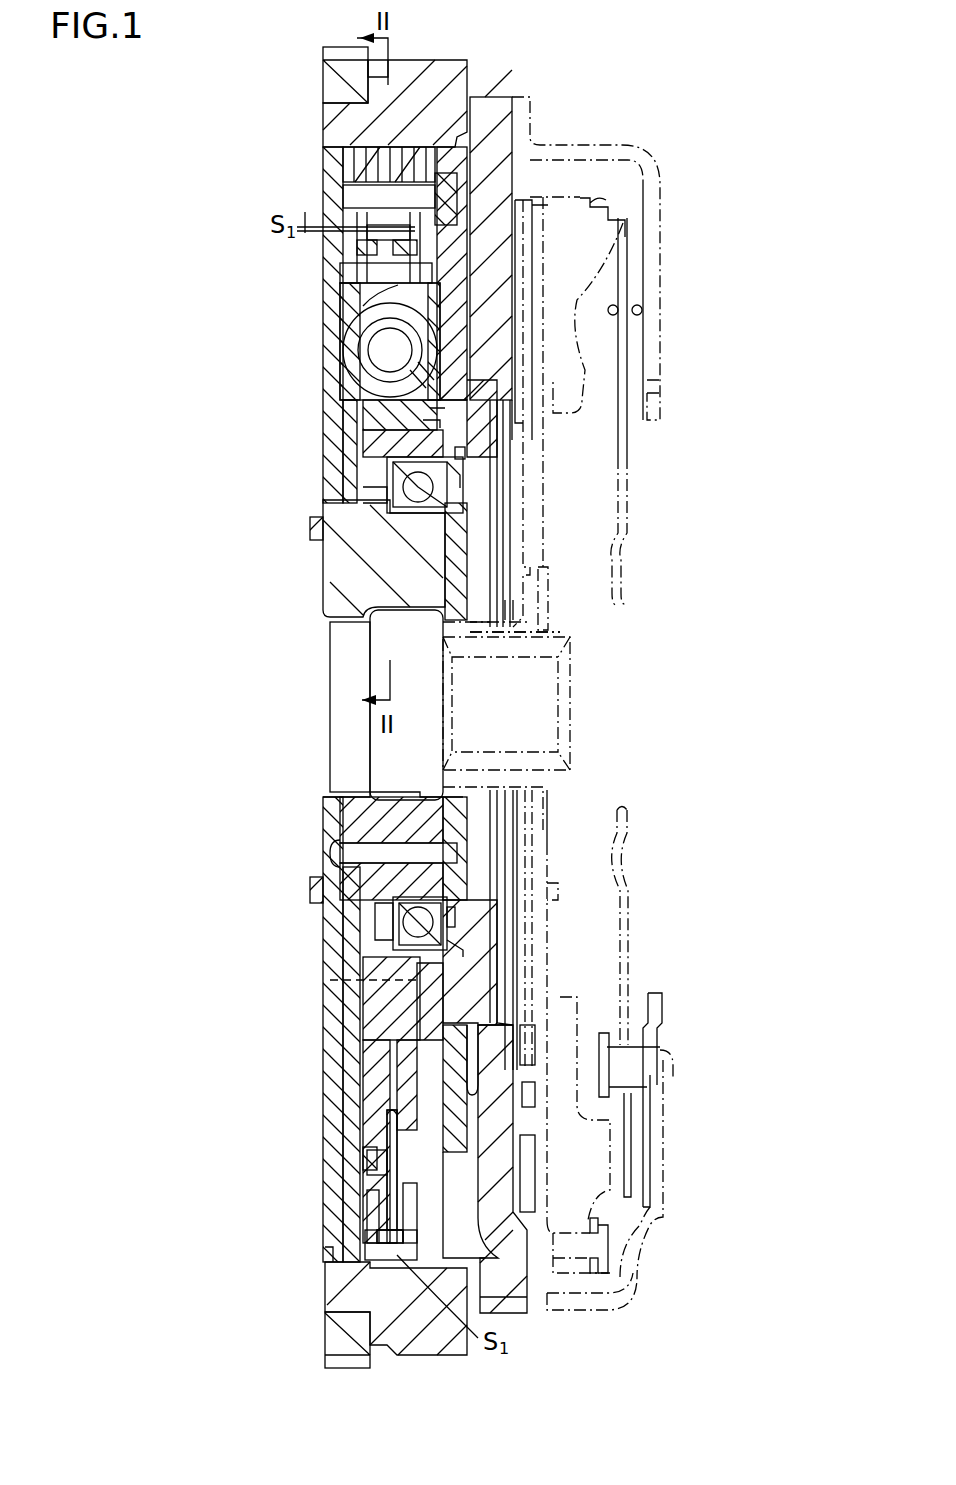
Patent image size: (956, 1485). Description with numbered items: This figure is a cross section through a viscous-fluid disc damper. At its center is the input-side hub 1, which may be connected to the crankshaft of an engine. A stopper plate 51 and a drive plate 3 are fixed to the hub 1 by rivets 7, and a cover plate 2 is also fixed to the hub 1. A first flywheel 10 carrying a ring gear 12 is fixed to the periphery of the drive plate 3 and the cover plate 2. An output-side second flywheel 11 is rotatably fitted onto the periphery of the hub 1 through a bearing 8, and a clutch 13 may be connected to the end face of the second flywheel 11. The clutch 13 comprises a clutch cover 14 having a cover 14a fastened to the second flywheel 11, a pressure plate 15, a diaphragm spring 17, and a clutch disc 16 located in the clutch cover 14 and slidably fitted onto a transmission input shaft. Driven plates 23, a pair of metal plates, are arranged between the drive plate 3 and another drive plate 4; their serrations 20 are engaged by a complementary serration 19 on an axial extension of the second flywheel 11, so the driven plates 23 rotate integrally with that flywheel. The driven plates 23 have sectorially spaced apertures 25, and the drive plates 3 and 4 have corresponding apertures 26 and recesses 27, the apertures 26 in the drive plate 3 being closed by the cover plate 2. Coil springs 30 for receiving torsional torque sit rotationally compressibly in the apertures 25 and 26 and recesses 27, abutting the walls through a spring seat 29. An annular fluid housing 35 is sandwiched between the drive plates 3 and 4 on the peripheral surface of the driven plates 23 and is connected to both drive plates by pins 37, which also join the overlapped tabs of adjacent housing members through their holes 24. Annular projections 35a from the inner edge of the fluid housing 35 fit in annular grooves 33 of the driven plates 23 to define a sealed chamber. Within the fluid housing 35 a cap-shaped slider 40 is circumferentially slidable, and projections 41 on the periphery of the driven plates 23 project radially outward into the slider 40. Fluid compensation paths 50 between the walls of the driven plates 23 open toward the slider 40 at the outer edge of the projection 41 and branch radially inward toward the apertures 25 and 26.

The input-side hub 1 is at (330, 585).
The cover plate 2 is at (327, 432).
The drive plate 3 is at (347, 470).
The drive plate 4 is at (450, 340).
The rivets 7 is at (347, 860).
The bearing 8 is at (414, 492).
The first flywheel 10 is at (327, 125).
The second flywheel 11 is at (505, 262).
The ring gear 12 is at (328, 60).
The clutch 13 is at (667, 220).
The clutch cover 14 is at (667, 285).
The cover 14a is at (655, 373).
The pressure plate 15 is at (581, 202).
The clutch disc 16 is at (552, 560).
The diaphragm spring 17 is at (627, 450).
The serration 19 is at (370, 980).
The serrations 20 is at (373, 950).
The driven plates 23 is at (393, 1033).
The holes 24 is at (370, 173).
The apertures 25 is at (363, 306).
The apertures 26 is at (347, 273).
The recesses 27 is at (430, 272).
The spring seat 29 is at (345, 327).
The coil springs 30 is at (353, 377).
The annular grooves 33 is at (340, 252).
The fluid housing 35 is at (363, 220).
The annular projections 35a is at (373, 1177).
The pins 37 is at (425, 190).
The slider 40 is at (370, 1262).
The projections 41 is at (377, 1237).
The fluid compensation paths 50 is at (390, 1110).
The stopper plate 51 is at (462, 797).